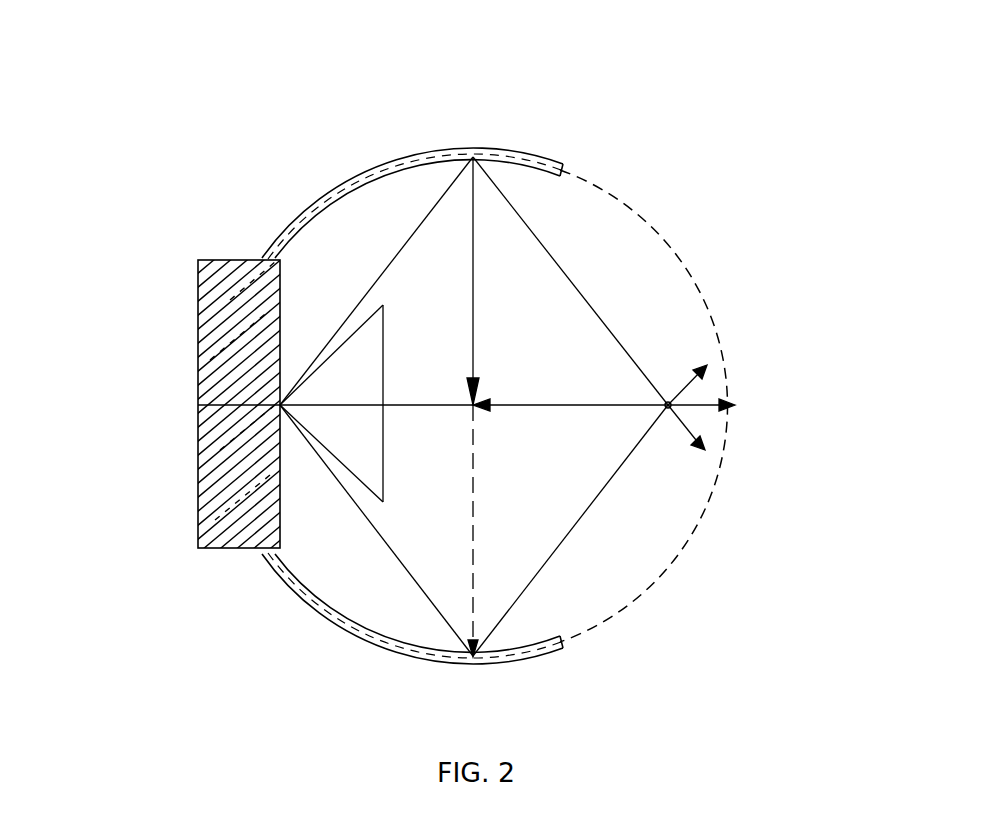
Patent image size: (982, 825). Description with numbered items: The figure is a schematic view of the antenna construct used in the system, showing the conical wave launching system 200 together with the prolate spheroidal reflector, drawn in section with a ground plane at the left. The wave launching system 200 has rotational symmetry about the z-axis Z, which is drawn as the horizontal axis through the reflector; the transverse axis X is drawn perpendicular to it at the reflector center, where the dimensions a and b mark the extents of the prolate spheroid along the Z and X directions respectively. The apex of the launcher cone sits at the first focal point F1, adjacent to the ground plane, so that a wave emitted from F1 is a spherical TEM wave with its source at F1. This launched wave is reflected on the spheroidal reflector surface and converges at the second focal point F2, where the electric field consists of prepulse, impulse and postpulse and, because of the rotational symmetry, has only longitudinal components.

The wave launching system 200 is at (787, 49).
The first focal point F1 is at (376, 406).
The second focal point F2 is at (590, 406).
The X axis X is at (475, 383).
The z-axis Z is at (484, 431).
The semi-major axis length a is at (546, 389).
The semi-minor axis length b is at (487, 345).